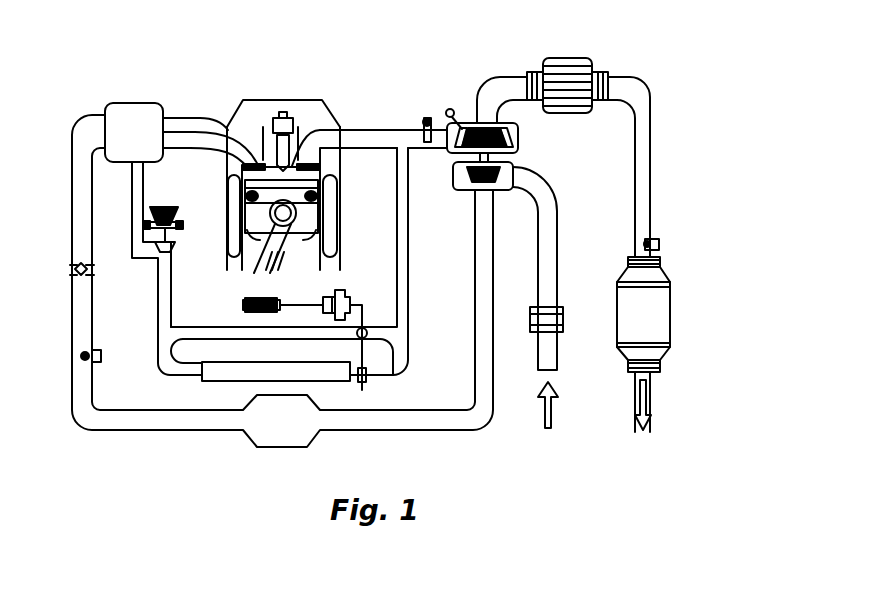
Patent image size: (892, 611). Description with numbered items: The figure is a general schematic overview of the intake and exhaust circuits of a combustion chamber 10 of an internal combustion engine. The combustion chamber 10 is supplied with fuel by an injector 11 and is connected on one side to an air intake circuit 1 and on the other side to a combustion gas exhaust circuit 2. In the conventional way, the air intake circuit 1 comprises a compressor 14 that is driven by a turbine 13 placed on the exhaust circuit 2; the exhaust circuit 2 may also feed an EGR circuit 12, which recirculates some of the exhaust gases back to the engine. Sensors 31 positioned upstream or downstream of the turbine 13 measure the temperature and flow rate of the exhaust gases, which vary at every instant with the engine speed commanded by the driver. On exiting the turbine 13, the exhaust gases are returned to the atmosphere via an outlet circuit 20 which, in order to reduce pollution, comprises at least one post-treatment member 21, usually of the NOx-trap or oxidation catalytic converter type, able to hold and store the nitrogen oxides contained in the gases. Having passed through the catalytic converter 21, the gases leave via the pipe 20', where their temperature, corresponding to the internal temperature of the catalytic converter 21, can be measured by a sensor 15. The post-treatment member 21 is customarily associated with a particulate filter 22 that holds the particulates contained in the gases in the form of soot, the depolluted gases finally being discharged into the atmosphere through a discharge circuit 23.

The air intake circuit 1 is at (181, 112).
The combustion chamber 10 is at (227, 125).
The injector 11 is at (308, 127).
The combustion gas exhaust circuit 2 is at (352, 126).
The sensors 31 is at (427, 118).
The EGR circuit 12 is at (408, 262).
The turbine 13 is at (480, 123).
The compressor 14 is at (470, 186).
The outlet circuit 20 is at (506, 79).
The post-treatment member 21 is at (548, 58).
The pipe 20' is at (612, 167).
The sensor 15 is at (656, 242).
The particulate filter 22 is at (656, 320).
The discharge circuit 23 is at (656, 405).